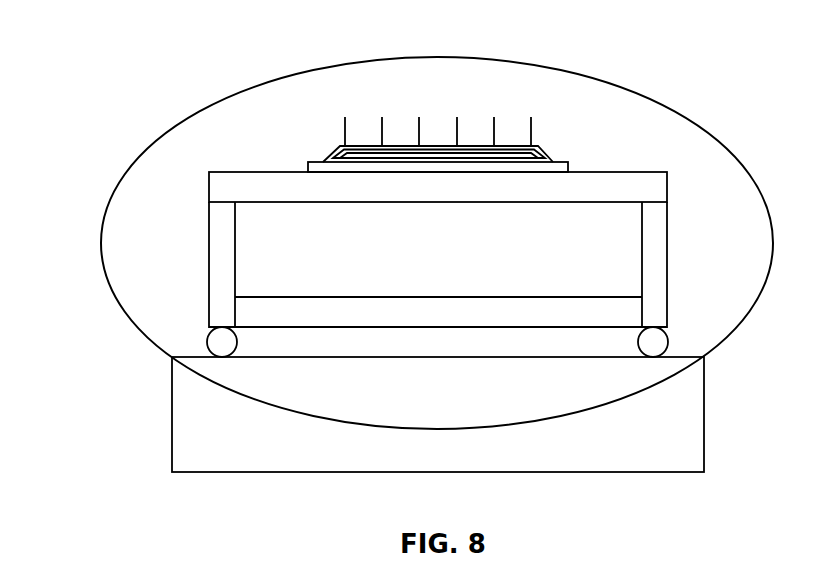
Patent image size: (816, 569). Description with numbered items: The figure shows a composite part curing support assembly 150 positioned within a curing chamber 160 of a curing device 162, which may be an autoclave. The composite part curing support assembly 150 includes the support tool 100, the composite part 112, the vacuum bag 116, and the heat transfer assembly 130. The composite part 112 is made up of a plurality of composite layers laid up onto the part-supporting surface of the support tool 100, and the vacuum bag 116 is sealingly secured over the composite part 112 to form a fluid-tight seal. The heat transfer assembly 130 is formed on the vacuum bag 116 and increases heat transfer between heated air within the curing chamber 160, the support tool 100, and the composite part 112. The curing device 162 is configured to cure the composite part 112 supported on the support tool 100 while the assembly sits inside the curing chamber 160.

The support tool 100 is at (661, 166).
The composite part 112 is at (392, 150).
The vacuum bag 116 is at (533, 147).
The heat transfer assembly 130 is at (538, 116).
The composite part curing support assembly 150 is at (184, 203).
The curing chamber 160 is at (386, 78).
The curing device 162 is at (670, 93).